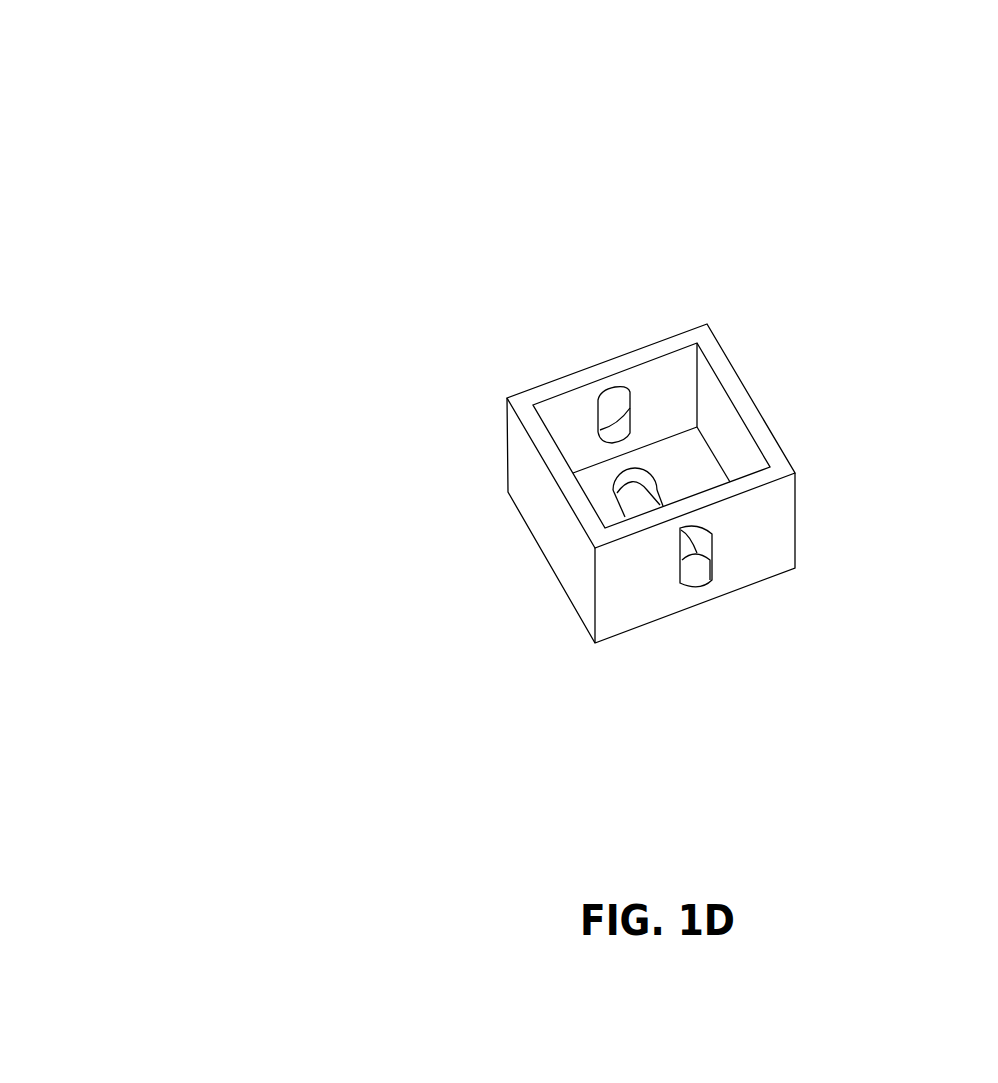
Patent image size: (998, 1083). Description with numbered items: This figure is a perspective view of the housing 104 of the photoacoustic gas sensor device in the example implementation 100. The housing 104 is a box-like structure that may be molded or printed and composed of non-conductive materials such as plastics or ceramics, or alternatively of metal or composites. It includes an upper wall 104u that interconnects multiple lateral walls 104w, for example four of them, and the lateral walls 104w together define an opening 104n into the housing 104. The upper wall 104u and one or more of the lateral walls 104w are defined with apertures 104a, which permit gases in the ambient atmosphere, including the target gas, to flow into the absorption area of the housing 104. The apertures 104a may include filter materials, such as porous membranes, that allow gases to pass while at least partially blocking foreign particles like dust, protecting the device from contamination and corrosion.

The example implementation 100 is at (128, 38).
The housing 104 is at (692, 300).
The aperture 104a is at (745, 696).
The opening 104n is at (582, 387).
The upper wall 104u is at (712, 475).
The lateral wall 104w is at (658, 382).